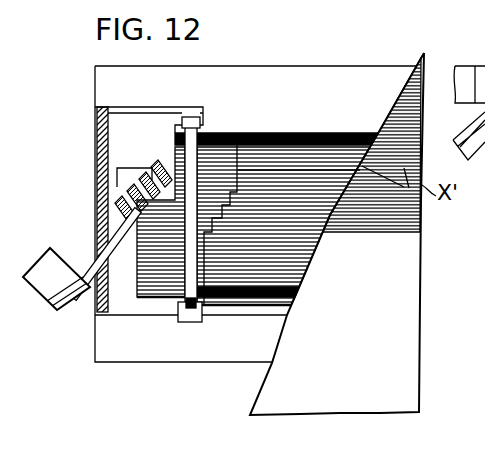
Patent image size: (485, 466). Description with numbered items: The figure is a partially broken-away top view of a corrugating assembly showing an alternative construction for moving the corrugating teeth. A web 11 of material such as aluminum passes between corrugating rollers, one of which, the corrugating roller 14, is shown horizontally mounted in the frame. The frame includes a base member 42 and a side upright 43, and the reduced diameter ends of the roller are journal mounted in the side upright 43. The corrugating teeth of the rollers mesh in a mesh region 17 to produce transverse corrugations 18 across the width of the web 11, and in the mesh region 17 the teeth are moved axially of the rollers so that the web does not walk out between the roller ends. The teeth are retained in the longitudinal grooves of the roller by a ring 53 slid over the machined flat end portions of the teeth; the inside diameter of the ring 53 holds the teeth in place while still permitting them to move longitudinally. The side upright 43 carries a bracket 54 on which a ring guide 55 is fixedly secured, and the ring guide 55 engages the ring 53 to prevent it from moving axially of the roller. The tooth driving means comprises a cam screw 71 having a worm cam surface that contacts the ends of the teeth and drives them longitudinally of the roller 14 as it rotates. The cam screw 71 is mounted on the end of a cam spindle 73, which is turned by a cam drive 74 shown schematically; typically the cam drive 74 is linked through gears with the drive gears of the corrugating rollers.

The web 11 is at (268, 406).
The corrugating roller 14 is at (298, 130).
The mesh region 17 is at (343, 136).
The transverse corrugations 18 is at (422, 222).
The base member 42 is at (218, 75).
The side upright 43 is at (97, 125).
The ring 53 is at (193, 148).
The bracket 54 is at (122, 316).
The ring guide 55 is at (200, 126).
The cam screw 71 is at (138, 188).
The cam spindle 73 is at (97, 217).
The cam drive 74 is at (44, 263).